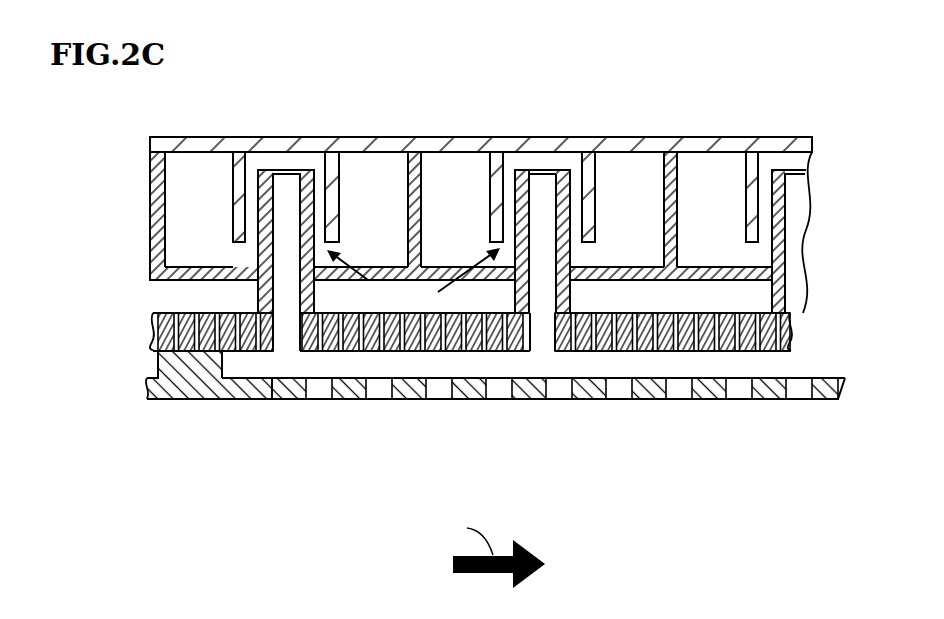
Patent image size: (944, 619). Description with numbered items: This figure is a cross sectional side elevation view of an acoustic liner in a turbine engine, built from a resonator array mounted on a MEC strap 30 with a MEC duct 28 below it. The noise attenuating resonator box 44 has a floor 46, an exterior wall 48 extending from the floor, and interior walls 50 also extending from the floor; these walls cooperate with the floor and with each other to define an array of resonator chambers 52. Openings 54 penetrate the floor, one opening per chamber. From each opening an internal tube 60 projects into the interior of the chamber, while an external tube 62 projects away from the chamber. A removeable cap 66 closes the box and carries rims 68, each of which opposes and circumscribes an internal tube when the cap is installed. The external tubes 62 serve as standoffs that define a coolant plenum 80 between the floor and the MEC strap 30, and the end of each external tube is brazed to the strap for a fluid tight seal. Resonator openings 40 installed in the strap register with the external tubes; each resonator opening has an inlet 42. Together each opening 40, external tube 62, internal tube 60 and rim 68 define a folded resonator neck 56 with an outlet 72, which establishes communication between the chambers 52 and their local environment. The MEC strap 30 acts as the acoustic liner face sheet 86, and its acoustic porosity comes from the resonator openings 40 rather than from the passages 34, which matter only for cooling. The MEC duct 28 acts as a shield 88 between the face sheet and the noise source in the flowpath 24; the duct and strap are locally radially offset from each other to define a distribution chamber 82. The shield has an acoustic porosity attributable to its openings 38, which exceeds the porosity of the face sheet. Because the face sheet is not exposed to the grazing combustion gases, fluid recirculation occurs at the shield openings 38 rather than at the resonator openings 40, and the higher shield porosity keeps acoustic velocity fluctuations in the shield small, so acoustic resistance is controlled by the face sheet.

The flowpath 24 is at (470, 472).
The MEC duct 28 is at (168, 394).
The shield 88 is at (150, 383).
The MEC strap 30 is at (428, 317).
The acoustic liner face sheet 86 is at (153, 337).
The passages 34 is at (743, 352).
The openings 38 is at (678, 393).
The resonator openings 40 is at (283, 344).
The inlet 42 is at (543, 352).
The noise attenuating resonator box 44 is at (656, 131).
The floor 46 is at (785, 305).
The exterior wall 48 is at (151, 215).
The interior walls 50 is at (407, 167).
The resonator chambers 52 is at (186, 194).
The openings 54 is at (549, 241).
The folded resonator neck 56 is at (382, 282).
The internal tube 60 is at (515, 210).
The external tube 62 is at (573, 303).
The removeable cap 66 is at (273, 145).
The rims 68 is at (595, 168).
The outlet 72 is at (250, 245).
The coolant plenum 80 is at (468, 309).
The distribution chamber 82 is at (479, 376).